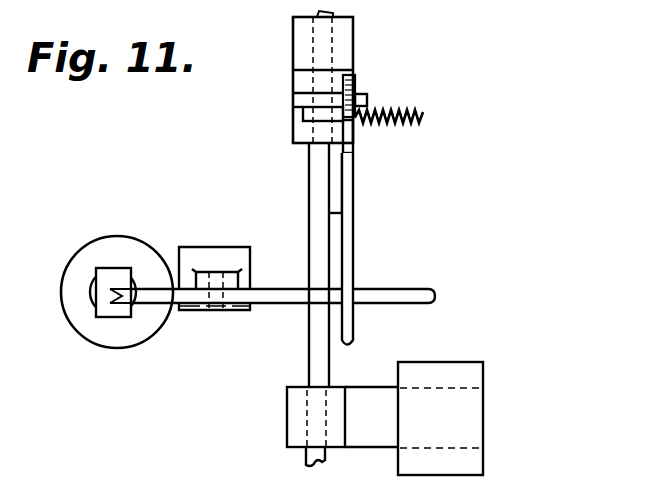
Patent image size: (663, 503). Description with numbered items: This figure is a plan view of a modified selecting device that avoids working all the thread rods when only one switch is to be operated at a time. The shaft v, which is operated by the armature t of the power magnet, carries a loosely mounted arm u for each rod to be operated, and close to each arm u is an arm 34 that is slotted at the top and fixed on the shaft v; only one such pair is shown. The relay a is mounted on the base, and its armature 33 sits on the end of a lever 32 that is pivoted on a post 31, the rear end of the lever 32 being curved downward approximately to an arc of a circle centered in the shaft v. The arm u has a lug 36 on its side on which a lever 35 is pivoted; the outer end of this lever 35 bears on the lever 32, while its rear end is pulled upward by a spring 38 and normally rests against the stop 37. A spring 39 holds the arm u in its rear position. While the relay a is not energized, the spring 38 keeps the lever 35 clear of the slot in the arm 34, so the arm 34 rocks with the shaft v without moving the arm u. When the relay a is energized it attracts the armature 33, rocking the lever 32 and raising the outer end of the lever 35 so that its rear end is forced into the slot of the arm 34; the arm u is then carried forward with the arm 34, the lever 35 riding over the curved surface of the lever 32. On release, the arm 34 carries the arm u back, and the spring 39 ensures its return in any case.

The post 31 is at (215, 278).
The lever 32 is at (437, 297).
The armature 33 is at (103, 287).
The arm 34 is at (307, 97).
The lever 35 is at (345, 242).
The lug 36 is at (337, 178).
The stop 37 is at (353, 155).
The spring 38 is at (357, 78).
The spring 39 is at (418, 112).
The relay a is at (90, 333).
The arm u is at (303, 112).
The shaft V is at (310, 358).
The armature t is at (470, 412).